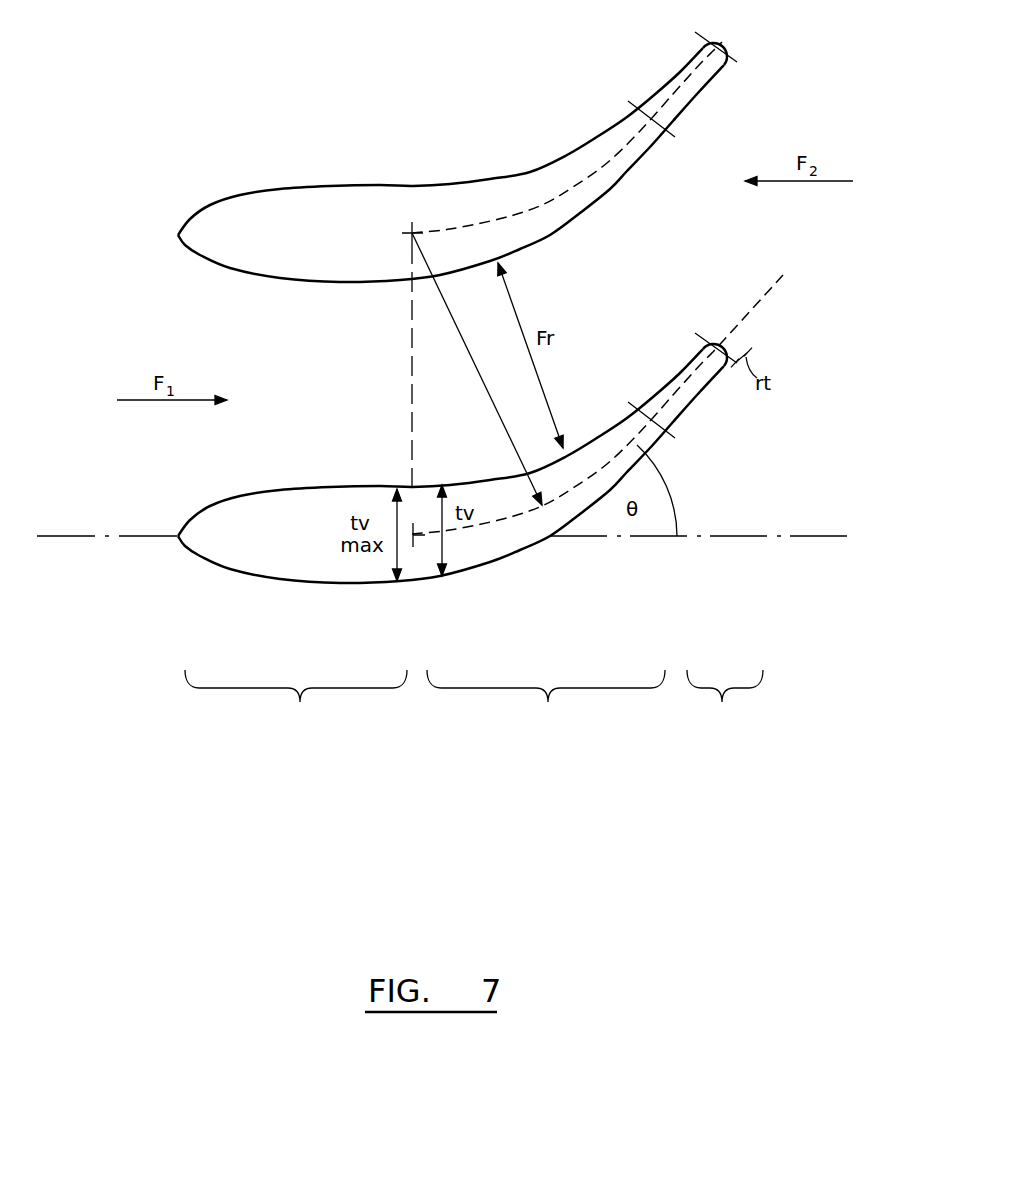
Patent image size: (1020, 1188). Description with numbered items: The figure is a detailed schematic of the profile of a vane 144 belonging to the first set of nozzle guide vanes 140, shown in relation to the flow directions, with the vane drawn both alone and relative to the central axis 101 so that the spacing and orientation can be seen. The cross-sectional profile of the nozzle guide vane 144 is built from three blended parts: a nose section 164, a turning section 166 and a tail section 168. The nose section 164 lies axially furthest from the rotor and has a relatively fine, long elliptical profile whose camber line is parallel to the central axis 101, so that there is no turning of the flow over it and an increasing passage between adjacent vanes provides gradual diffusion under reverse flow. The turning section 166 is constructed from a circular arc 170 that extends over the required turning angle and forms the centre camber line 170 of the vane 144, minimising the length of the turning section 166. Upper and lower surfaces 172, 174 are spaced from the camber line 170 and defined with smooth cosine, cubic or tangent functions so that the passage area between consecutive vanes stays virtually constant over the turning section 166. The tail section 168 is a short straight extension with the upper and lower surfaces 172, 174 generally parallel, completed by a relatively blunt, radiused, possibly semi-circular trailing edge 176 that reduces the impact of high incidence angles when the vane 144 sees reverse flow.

The first set of nozzle guide vanes 140 is at (227, 147).
The nozzle guide vane 144 is at (337, 184).
The upper surface 172 is at (350, 487).
The lower surface 174 is at (330, 583).
The circular arc / centre camber line 170 is at (497, 523).
The trailing edge 176 is at (718, 337).
The central axis 101 is at (742, 537).
The nose section 164 is at (296, 704).
The turning section 166 is at (546, 704).
The tail section 168 is at (725, 704).